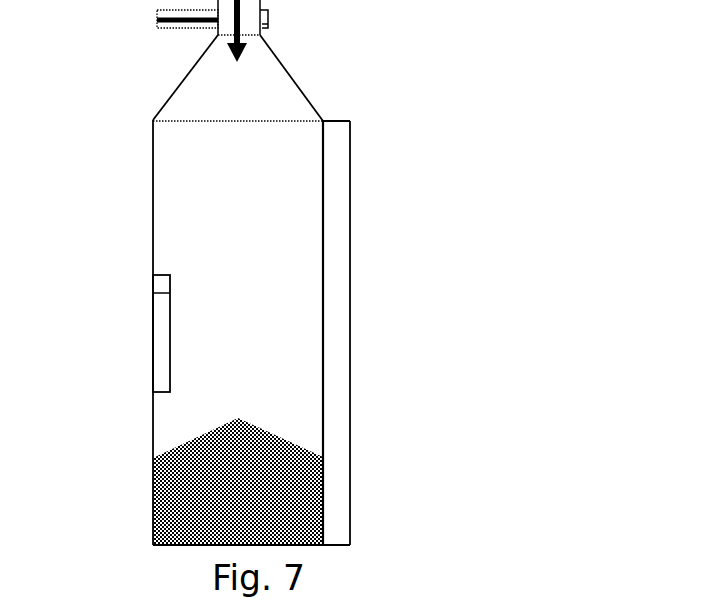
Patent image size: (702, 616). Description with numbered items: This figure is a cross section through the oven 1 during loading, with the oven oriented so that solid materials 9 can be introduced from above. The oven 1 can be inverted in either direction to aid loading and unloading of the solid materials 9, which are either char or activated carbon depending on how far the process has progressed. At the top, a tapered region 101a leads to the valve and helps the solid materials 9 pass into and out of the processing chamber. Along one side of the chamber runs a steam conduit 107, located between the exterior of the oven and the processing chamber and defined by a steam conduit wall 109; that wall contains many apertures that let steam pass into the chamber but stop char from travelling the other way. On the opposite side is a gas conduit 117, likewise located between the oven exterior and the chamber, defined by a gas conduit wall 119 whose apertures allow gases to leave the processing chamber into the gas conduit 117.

The oven 1 is at (312, 272).
The solid materials 9 is at (303, 508).
The tapered region 101a is at (183, 78).
The steam conduit 107 is at (340, 222).
The steam conduit wall 109 is at (323, 356).
The gas conduit 117 is at (160, 383).
The gas conduit wall 119 is at (153, 293).